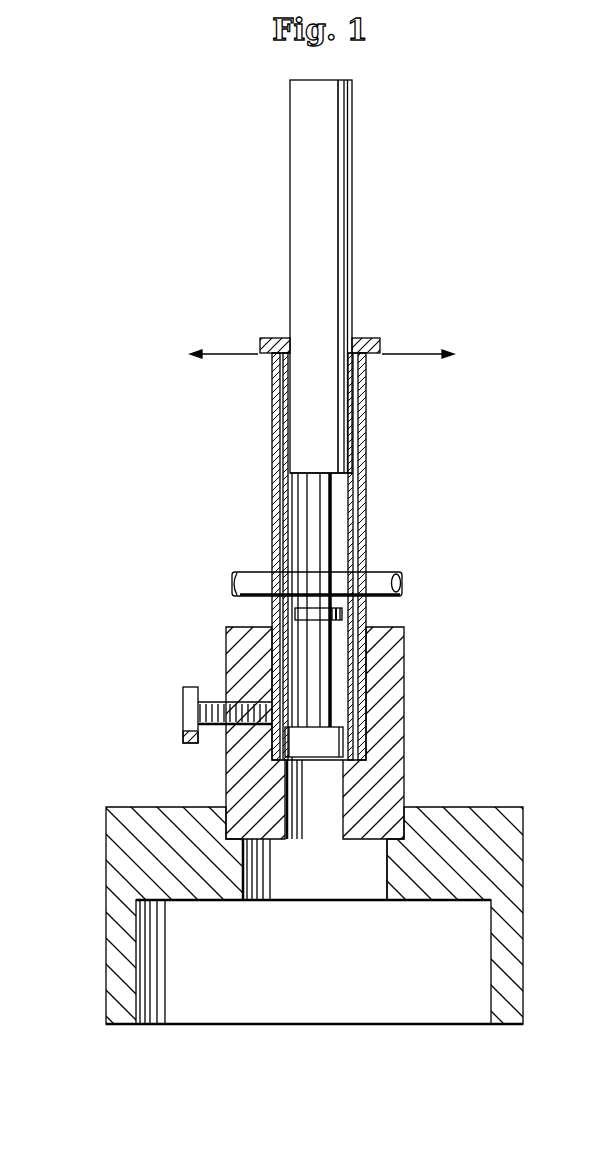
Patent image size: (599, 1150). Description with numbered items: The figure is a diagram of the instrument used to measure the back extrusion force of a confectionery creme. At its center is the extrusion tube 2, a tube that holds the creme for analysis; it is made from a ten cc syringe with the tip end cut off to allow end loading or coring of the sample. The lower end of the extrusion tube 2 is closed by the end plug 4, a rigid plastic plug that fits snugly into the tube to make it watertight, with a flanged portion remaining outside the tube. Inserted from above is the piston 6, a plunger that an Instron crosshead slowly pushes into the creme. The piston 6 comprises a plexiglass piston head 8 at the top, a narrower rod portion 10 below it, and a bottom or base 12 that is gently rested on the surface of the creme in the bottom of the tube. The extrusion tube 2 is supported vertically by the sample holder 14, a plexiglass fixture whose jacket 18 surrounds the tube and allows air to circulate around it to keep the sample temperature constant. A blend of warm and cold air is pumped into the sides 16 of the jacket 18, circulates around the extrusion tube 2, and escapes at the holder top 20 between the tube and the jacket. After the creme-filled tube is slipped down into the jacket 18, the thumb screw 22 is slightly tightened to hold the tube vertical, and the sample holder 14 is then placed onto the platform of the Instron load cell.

The extrusion tube 2 is at (382, 345).
The end plug 4 is at (330, 741).
The piston 6 is at (364, 160).
The piston head 8 is at (328, 240).
The rod portion 10 is at (318, 512).
The base 12 is at (312, 622).
The sample holder 14 is at (146, 793).
The sides 16 is at (222, 583).
The jacket 18 is at (366, 410).
The holder top 20 is at (321, 354).
The thumb screw 22 is at (186, 740).